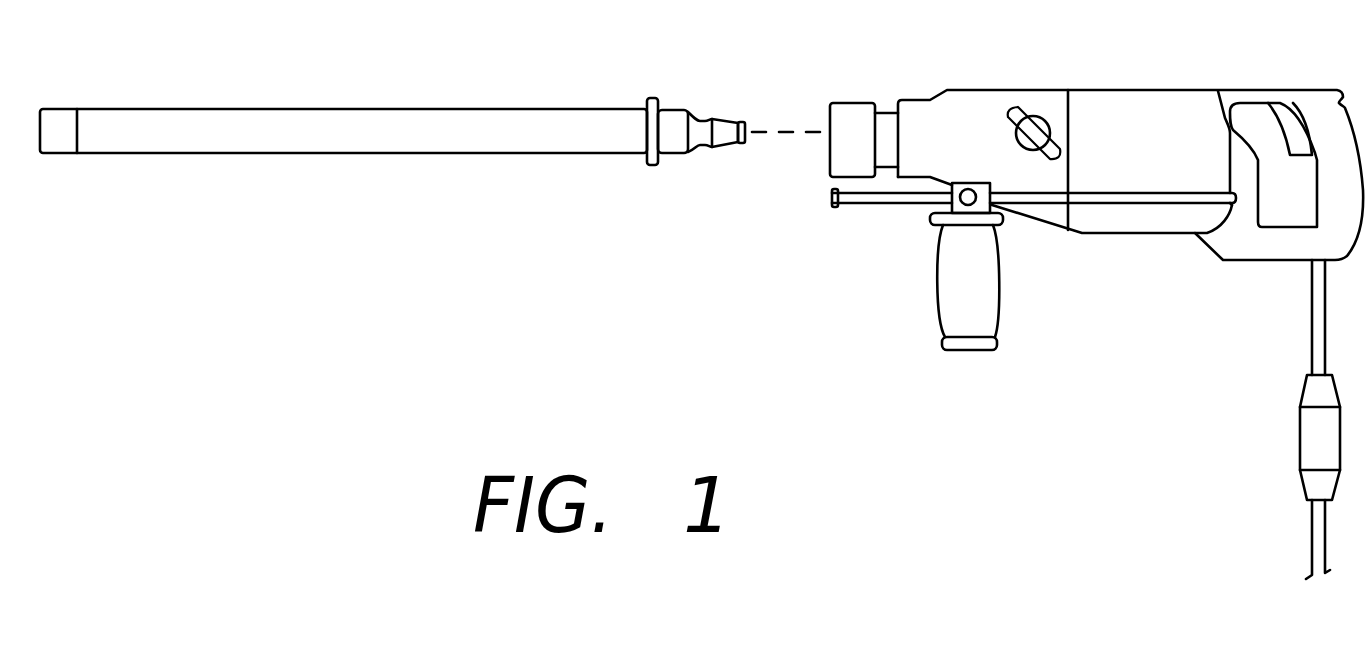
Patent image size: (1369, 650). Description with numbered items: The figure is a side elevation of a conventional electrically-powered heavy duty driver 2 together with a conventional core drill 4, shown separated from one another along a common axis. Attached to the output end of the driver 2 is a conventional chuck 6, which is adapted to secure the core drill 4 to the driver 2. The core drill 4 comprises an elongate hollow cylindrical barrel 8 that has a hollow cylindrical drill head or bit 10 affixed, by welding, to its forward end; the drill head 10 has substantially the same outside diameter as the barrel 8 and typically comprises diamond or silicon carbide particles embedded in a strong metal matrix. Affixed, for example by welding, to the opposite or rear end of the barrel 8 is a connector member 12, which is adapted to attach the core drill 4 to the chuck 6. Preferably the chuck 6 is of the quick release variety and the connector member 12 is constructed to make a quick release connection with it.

The electrically-powered heavy duty driver 2 is at (1138, 88).
The core drill 4 is at (392, 139).
The chuck 6 is at (845, 96).
The barrel 8 is at (328, 135).
The drill head 10 is at (56, 108).
The connector member 12 is at (698, 158).